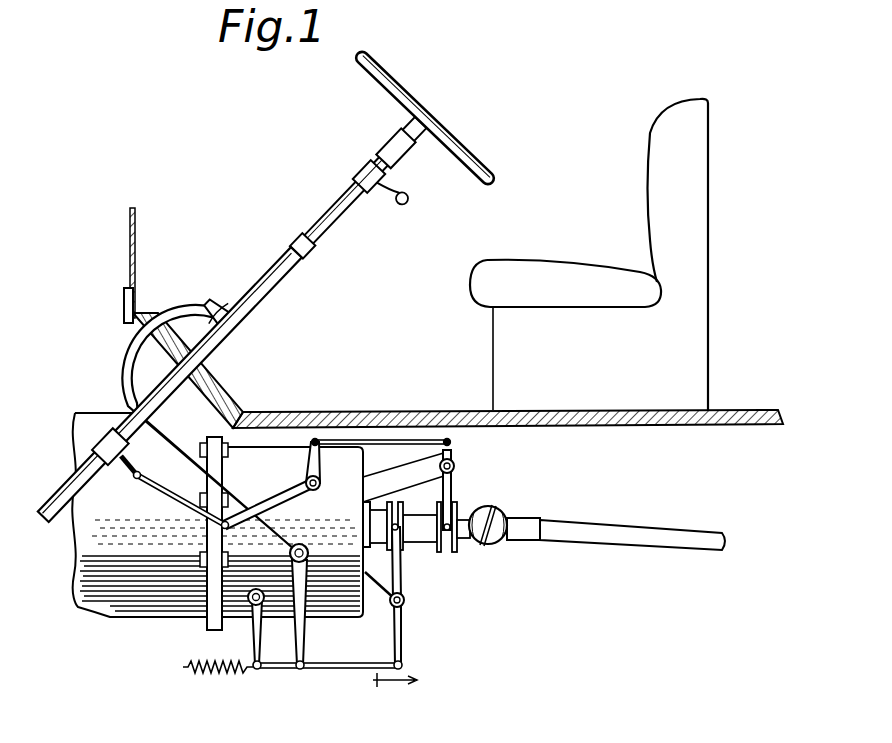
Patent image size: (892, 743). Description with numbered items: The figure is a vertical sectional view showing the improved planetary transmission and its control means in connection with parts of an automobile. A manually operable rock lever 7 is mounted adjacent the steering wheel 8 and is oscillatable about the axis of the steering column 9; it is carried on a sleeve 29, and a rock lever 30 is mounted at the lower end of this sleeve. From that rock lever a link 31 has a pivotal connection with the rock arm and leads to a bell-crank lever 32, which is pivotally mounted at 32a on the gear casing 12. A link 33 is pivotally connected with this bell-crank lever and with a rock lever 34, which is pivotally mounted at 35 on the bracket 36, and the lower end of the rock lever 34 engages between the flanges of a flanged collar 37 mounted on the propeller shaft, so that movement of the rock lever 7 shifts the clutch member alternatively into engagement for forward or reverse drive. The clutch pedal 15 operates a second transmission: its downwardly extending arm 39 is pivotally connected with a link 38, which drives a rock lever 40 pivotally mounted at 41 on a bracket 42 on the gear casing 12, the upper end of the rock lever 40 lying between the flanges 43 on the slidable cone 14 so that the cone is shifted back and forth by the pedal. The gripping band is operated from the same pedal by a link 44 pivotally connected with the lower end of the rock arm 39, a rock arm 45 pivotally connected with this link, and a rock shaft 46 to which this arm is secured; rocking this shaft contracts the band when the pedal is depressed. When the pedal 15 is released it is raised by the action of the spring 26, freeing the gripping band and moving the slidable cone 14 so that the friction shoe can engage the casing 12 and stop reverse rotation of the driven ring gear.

The rock lever 7 is at (410, 197).
The steering wheel 8 is at (483, 162).
The steering column 9 is at (393, 147).
The gear casing 12 is at (363, 593).
The slidable cone 14 is at (378, 517).
The clutch pedal 15 is at (197, 320).
The spring 26 is at (232, 672).
The sleeve 29 is at (343, 220).
The rock lever 30 is at (123, 460).
The link 31 is at (167, 492).
The bell-crank lever 32 is at (287, 495).
The pivot 32a is at (318, 488).
The link 33 is at (385, 442).
The rock lever 34 is at (452, 483).
The pivot 35 is at (453, 467).
The bracket 36 is at (413, 478).
The flanged collar 37 is at (462, 552).
The link 38 is at (357, 667).
The downwardly extending arm 39 is at (300, 640).
The rock lever 40 is at (403, 638).
The pivot 41 is at (405, 598).
The bracket 42 is at (390, 602).
The flanges 43 is at (407, 547).
The link 44 is at (300, 670).
The rock arm 45 is at (250, 636).
The rock shaft 46 is at (255, 589).